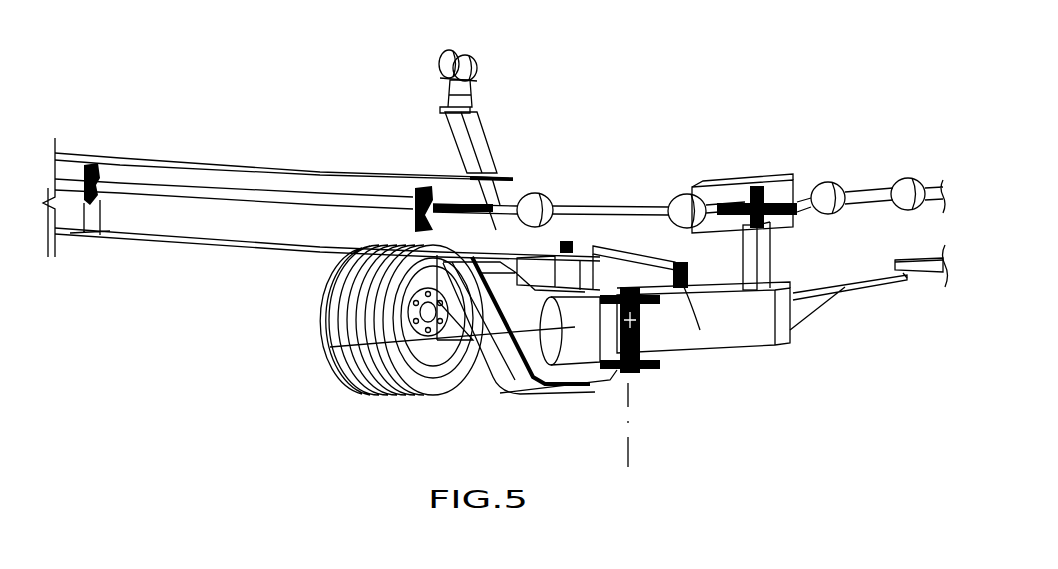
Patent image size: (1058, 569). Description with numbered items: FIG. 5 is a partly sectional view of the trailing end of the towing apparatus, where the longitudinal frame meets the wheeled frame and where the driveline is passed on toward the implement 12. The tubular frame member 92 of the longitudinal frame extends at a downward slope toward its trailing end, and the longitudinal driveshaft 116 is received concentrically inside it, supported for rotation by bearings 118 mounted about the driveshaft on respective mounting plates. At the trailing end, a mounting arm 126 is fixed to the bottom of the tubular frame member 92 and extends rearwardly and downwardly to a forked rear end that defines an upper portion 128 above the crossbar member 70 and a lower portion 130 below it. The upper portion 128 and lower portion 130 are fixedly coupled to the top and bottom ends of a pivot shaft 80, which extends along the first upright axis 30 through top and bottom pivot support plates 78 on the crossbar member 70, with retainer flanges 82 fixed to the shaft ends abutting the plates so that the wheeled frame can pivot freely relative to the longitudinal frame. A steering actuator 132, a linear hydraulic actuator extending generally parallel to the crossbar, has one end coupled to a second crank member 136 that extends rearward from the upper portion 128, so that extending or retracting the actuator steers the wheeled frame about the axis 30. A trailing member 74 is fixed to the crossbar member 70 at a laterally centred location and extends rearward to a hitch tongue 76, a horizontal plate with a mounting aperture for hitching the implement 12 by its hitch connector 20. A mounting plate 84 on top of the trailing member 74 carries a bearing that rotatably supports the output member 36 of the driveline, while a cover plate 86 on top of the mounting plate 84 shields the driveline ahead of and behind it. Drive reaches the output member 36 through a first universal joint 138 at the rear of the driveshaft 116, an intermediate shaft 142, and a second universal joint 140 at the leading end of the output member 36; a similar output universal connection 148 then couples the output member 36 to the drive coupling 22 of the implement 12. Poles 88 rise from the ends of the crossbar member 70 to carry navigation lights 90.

The implement 12 is at (931, 297).
The hitch connector 20 is at (918, 258).
The drive coupling 22 is at (922, 178).
The first upright axis 30 is at (628, 440).
The output member 36 is at (780, 207).
The crossbar member 70 is at (440, 380).
The trailing member 74 is at (748, 335).
The hitch tongue 76 is at (847, 290).
The pivot support plates 78 is at (590, 365).
The pivot shaft 80 is at (642, 335).
The retainer flanges 82 is at (393, 313).
The mounting plate 84 is at (757, 246).
The cover plate 86 is at (717, 187).
The poles 88 is at (468, 128).
The navigation lights 90 is at (473, 55).
The tubular frame member 92 is at (122, 158).
The longitudinal driveshaft 116 is at (203, 193).
The bearings 118 is at (84, 170).
The mounting arm 126 is at (407, 280).
The upper portion 128 is at (572, 255).
The lower portion 130 is at (553, 372).
The steering actuator 132 is at (637, 252).
The second crank member 136 is at (683, 285).
The first universal joint 138 is at (538, 193).
The second universal joint 140 is at (680, 205).
The intermediate shaft 142 is at (620, 207).
The output universal connection 148 is at (887, 165).